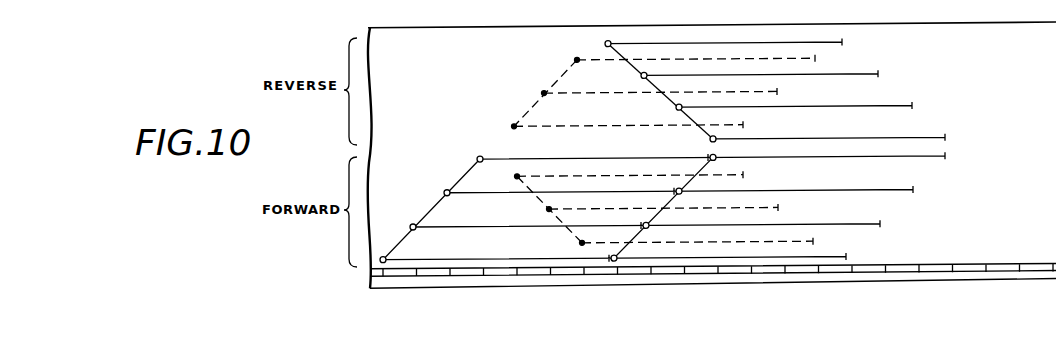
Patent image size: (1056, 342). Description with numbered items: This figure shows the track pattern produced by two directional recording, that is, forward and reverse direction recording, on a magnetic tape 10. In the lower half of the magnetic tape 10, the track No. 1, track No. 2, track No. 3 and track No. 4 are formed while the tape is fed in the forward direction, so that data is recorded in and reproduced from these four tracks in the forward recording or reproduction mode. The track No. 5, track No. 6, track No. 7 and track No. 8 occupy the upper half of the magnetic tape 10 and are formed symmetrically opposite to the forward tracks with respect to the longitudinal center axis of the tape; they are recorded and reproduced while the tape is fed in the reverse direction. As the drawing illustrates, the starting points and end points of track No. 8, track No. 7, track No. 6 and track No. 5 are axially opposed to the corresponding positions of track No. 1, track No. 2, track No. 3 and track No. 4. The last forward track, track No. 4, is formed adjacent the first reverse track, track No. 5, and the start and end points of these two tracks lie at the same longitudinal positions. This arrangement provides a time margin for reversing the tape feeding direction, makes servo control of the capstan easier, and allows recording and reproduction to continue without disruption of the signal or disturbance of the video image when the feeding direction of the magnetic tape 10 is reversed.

The magnetic tape 10 is at (917, 26).
The track No. 1 is at (815, 257).
The track No. 2 is at (813, 224).
The track No. 3 is at (815, 190).
The track No. 4 is at (873, 158).
The track No. 5 is at (863, 139).
The track No. 6 is at (812, 107).
The track No. 7 is at (810, 75).
The track No. 8 is at (808, 44).